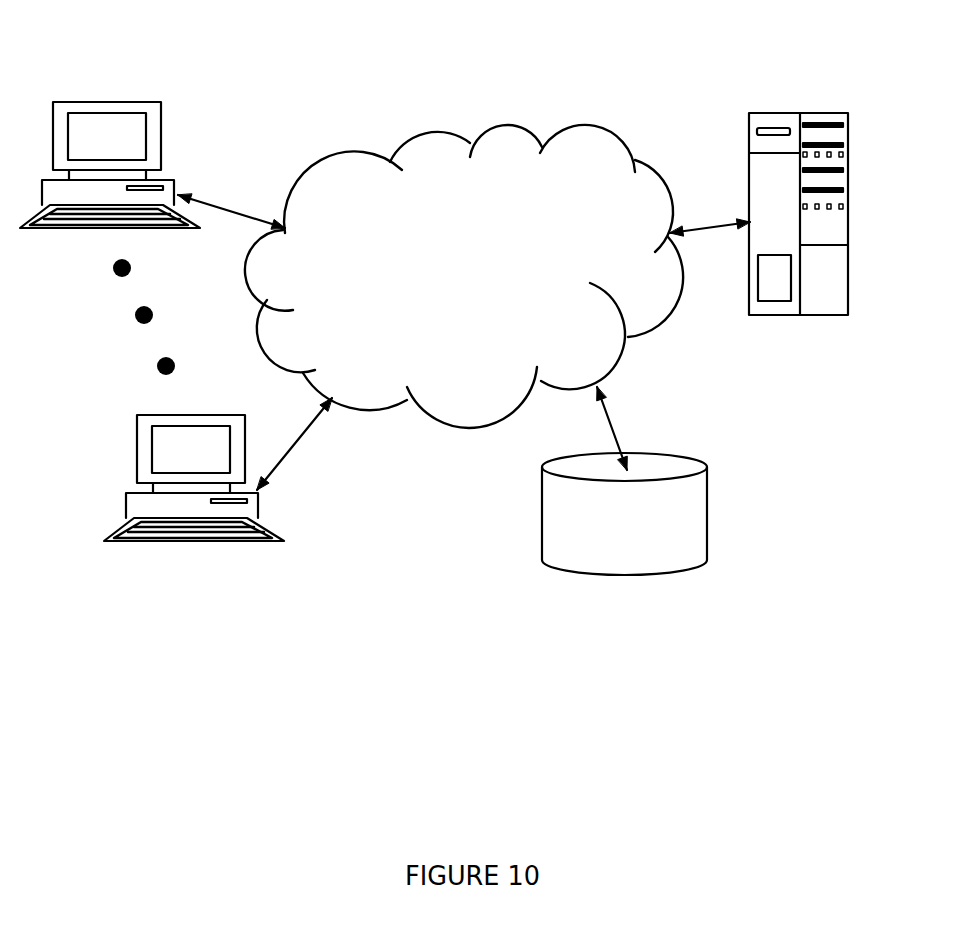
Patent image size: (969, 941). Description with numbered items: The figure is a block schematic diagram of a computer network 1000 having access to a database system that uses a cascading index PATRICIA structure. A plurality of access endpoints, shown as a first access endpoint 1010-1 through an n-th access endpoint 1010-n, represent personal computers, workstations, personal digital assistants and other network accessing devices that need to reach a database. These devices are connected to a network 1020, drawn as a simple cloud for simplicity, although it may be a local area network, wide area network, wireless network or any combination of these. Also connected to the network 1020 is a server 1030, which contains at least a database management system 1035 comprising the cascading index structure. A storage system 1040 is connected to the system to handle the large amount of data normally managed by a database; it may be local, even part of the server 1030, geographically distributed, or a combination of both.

The network system 1000 is at (541, 47).
The client computer 1010-1 is at (202, 103).
The client computer 1010-n is at (137, 452).
The network 1020 is at (453, 138).
The server 1030 is at (828, 232).
The server module 1035 is at (772, 300).
The database 1040 is at (707, 490).